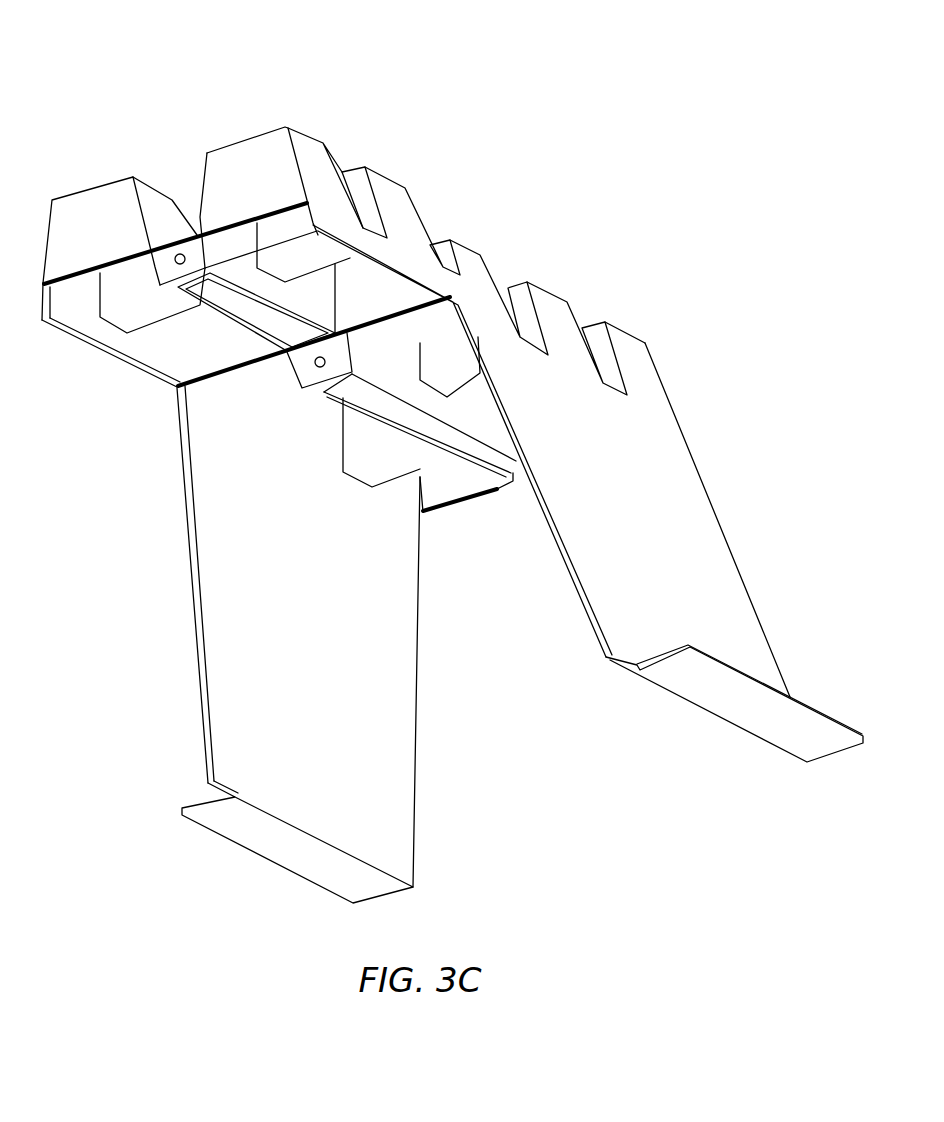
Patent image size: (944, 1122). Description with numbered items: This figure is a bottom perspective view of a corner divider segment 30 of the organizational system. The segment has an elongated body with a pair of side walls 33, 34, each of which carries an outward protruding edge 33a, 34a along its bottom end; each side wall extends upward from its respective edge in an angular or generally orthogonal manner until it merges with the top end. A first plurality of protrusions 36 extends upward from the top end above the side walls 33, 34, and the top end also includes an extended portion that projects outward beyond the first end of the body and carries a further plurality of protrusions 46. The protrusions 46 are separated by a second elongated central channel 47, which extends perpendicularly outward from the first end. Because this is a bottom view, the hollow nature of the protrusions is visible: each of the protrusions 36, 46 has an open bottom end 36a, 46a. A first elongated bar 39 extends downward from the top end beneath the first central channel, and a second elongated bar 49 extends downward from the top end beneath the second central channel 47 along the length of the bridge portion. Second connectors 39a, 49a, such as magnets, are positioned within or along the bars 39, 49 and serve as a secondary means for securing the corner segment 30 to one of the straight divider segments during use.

The corner divider segment 30 is at (116, 90).
The side wall 33 is at (622, 534).
The outward protruding edge 33a is at (742, 703).
The side wall 34 is at (326, 631).
The outward protruding edge 34a is at (238, 822).
The first plurality of protrusions 36 is at (477, 257).
The open bottom end 36a is at (364, 448).
The first elongated bar 39 is at (336, 372).
The second connector 39a is at (400, 417).
The protrusions 46 is at (88, 187).
The open bottom end 46a is at (72, 300).
The second elongated central channel 47 is at (182, 190).
The second elongated bar 49 is at (158, 268).
The second connector 49a is at (248, 303).